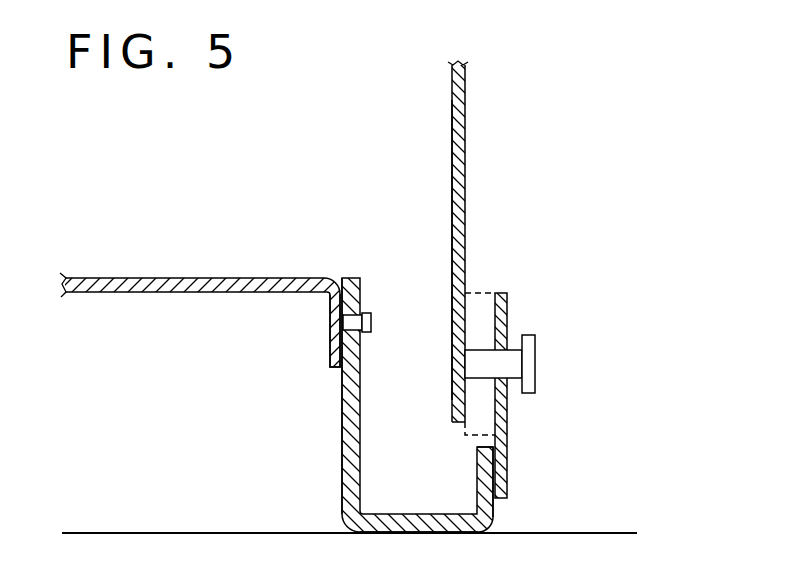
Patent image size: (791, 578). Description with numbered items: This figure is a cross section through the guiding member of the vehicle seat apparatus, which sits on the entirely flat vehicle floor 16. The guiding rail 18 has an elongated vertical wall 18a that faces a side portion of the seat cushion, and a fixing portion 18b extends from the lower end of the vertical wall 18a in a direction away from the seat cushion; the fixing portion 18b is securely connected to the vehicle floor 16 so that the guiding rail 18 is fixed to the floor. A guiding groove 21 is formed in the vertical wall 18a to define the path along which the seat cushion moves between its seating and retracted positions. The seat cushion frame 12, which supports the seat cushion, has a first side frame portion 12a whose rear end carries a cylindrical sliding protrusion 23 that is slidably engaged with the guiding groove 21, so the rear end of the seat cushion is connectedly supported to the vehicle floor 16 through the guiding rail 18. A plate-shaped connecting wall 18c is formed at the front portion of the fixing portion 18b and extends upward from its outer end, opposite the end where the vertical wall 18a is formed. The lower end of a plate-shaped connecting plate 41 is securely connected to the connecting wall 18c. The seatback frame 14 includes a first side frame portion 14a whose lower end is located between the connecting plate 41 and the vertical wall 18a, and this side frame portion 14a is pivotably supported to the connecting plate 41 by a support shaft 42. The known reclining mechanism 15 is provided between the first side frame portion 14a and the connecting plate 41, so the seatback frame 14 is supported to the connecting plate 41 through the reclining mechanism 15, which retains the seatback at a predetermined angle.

The seat cushion frame 12 is at (200, 295).
The first side frame portion 12a is at (330, 348).
The seatback frame 14 is at (495, 241).
The first side frame portion 14a is at (463, 178).
The reclining mechanism 15 is at (486, 302).
The vehicle floor 16 is at (141, 531).
The guiding rail 18 is at (377, 405).
The vertical wall 18a is at (341, 426).
The fixing portion 18b is at (409, 522).
The connecting wall 18c is at (477, 460).
The guiding groove 21 is at (343, 320).
The sliding protrusion 23 is at (371, 323).
The connecting plate 41 is at (507, 460).
The support shaft 42 is at (535, 360).